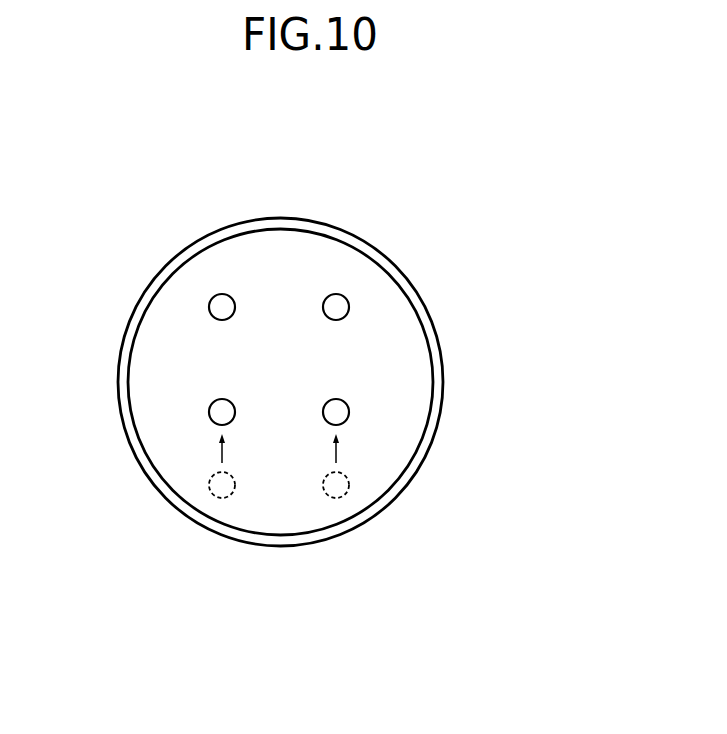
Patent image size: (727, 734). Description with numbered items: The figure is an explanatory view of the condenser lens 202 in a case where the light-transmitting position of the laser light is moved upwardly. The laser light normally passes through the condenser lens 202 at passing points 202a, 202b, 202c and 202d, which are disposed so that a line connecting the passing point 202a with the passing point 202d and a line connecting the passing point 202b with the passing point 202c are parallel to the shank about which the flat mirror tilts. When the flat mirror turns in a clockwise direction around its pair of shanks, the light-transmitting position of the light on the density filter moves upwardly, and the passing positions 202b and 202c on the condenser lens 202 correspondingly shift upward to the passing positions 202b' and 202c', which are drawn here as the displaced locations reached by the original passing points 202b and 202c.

The condenser lens 202 is at (438, 332).
The passing point 202a is at (220, 301).
The passing point 202b is at (410, 547).
The passing position 202b' is at (415, 458).
The passing point 202c is at (160, 547).
The passing position 202c' is at (160, 457).
The passing point 202d is at (337, 301).